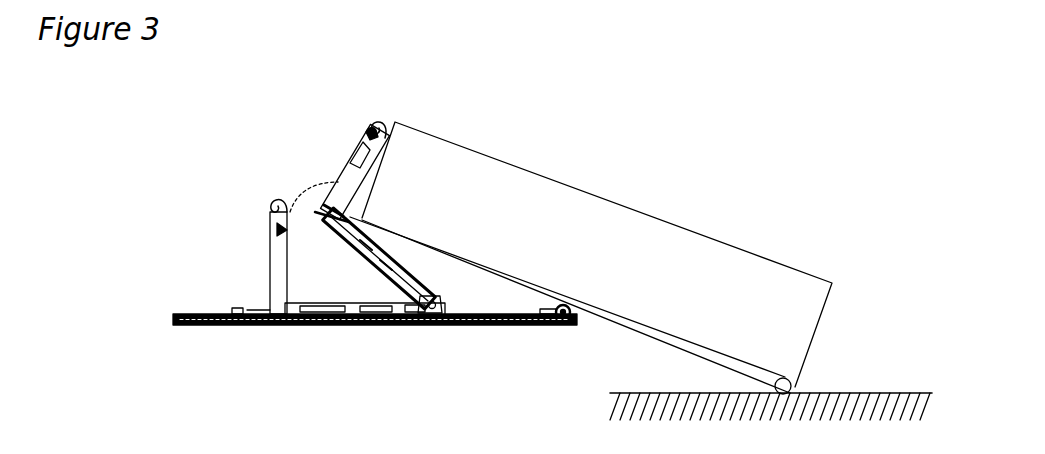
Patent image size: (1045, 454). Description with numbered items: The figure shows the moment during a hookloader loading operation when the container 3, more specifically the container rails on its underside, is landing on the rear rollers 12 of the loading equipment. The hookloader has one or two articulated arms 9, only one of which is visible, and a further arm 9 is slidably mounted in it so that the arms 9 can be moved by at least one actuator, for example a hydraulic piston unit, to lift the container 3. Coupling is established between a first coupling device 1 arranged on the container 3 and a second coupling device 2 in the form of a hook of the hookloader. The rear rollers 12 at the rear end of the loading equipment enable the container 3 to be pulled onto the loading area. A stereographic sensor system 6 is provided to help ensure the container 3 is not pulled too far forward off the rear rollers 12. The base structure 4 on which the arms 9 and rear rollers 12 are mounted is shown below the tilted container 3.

The first coupling device 1 is at (370, 133).
The second coupling device 2 is at (380, 122).
The container 3 is at (578, 233).
The base frame 4 is at (352, 334).
The stereographic sensor system 6 is at (357, 160).
The articulated arm 9 is at (340, 187).
The rear rollers 12 is at (570, 308).